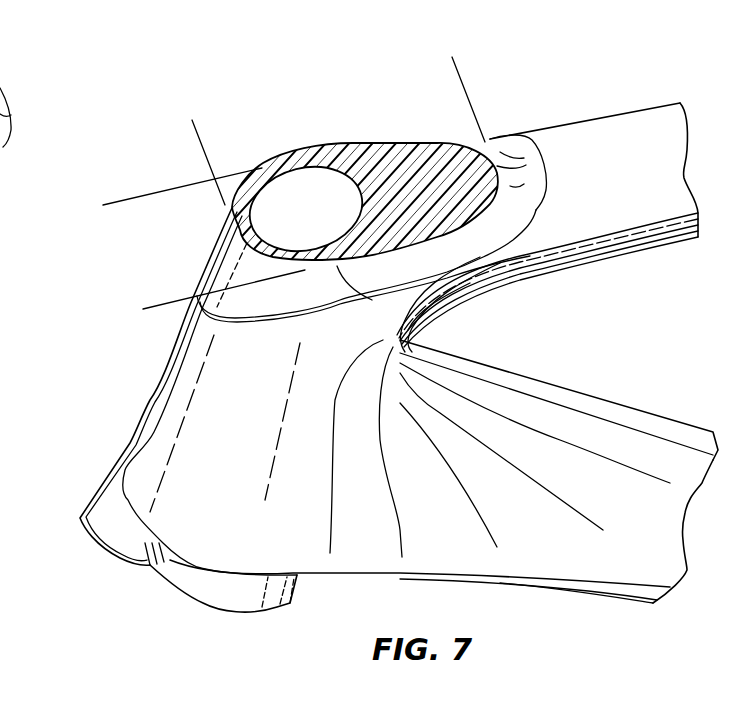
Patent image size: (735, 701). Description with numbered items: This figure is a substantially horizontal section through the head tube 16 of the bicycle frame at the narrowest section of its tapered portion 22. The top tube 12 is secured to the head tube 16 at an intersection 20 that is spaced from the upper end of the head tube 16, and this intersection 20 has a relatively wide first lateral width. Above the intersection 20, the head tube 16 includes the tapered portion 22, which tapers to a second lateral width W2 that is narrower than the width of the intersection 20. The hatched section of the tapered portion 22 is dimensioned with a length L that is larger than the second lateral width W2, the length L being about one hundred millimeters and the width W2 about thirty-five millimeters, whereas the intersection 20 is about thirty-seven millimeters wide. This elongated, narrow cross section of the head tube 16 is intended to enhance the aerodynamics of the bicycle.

The top tube 12 is at (619, 143).
The head tube 16 is at (180, 363).
The intersection 20 is at (310, 317).
The tapered portion 22 is at (423, 308).
The length L is at (445, 69).
The second lateral width W2 is at (160, 304).